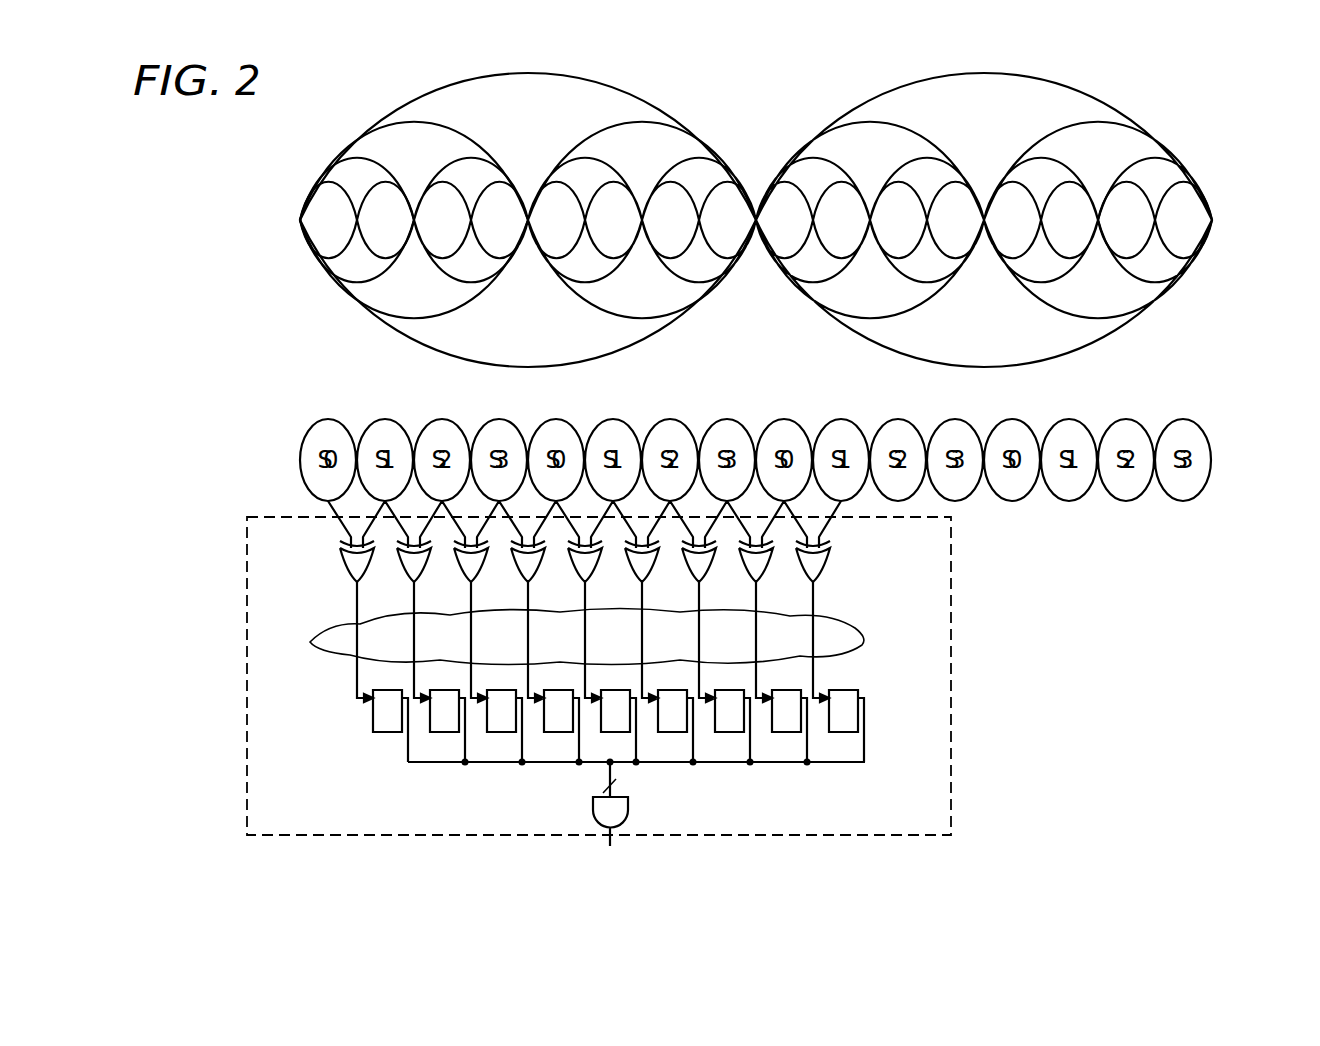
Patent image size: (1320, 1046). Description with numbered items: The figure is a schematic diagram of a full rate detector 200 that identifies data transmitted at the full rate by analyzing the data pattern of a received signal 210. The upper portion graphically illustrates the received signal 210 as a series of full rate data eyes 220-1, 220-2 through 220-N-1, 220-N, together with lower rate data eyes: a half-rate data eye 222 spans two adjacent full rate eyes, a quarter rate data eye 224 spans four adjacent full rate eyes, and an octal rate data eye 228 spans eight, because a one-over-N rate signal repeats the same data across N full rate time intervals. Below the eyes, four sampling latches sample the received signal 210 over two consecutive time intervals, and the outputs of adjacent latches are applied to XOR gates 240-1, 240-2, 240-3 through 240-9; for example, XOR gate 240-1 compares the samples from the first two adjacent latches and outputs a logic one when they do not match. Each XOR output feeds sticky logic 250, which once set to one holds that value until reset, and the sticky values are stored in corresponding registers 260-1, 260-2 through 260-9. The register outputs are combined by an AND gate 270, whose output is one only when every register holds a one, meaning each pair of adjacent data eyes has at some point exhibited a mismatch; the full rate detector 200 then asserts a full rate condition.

The full rate detector 200 is at (247, 530).
The received signal 210 is at (798, 215).
The full rate data eye 220-1 is at (342, 186).
The full rate data eye 220-2 is at (378, 262).
The full rate data eye 220-N-1 is at (1125, 180).
The full rate data eye 220-N is at (1170, 264).
The half-rate data eye 222 is at (386, 164).
The quarter rate data eye 224 is at (463, 127).
The octal rate data eye 228 is at (624, 92).
The XOR gate 240-1 is at (347, 577).
The XOR gate 240-2 is at (399, 557).
The XOR gate 240-3 is at (457, 557).
The XOR gate 240-9 is at (823, 577).
The sticky logic 250 is at (328, 643).
The register 260-1 is at (371, 722).
The register 260-2 is at (443, 733).
The register 260-9 is at (845, 691).
The AND gate 270 is at (628, 806).